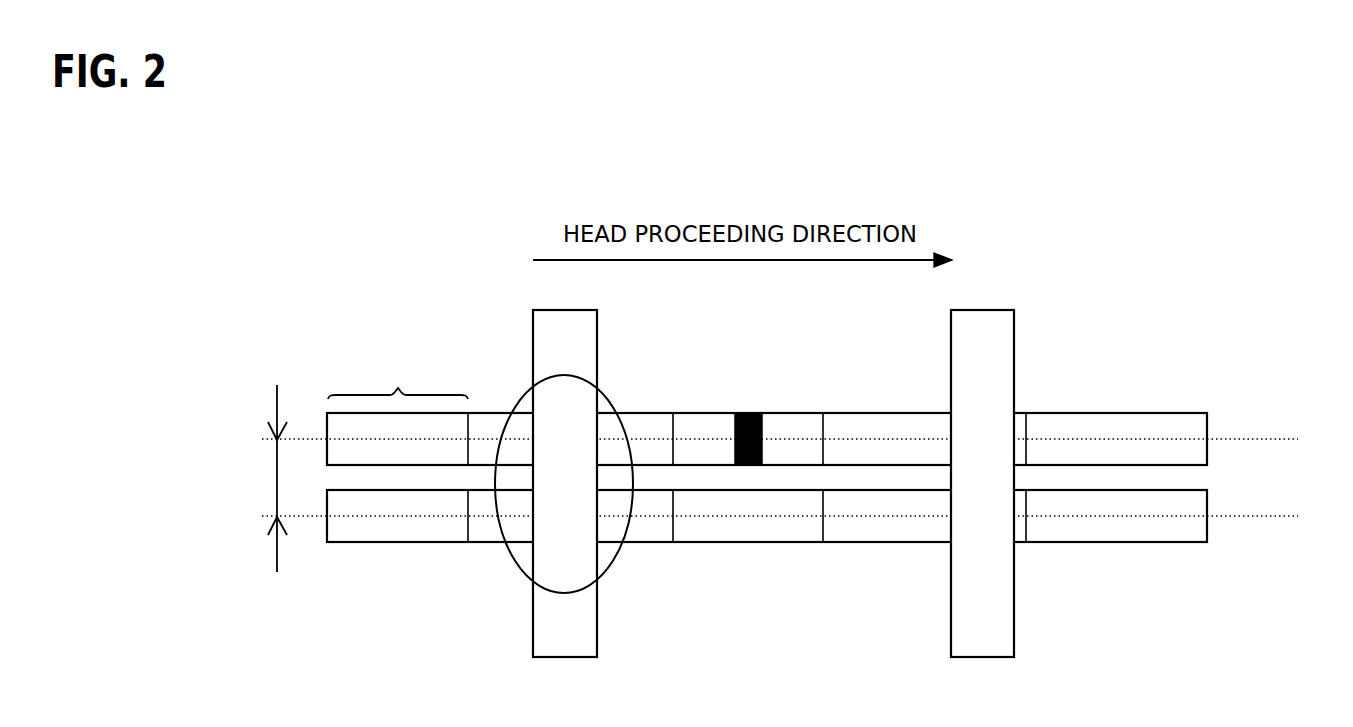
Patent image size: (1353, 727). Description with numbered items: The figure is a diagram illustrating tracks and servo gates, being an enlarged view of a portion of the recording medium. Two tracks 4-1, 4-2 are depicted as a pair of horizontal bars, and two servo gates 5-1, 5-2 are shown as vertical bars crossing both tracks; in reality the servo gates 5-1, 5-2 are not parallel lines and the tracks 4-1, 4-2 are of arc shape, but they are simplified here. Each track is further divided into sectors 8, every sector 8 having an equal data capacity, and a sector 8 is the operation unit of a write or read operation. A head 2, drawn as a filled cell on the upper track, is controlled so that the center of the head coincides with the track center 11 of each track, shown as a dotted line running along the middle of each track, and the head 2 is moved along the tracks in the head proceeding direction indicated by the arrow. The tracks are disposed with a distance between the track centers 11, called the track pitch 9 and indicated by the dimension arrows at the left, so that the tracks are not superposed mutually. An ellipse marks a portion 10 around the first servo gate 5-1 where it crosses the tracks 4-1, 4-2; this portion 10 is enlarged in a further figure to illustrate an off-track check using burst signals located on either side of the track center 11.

The head 2 is at (743, 413).
The track 4-1 is at (1123, 413).
The track 4-2 is at (1135, 543).
The servo gate 5-1 is at (597, 639).
The servo gate 5-2 is at (1014, 637).
The sector 8 is at (398, 376).
The track pitch 9 is at (277, 462).
The portion 10 is at (604, 396).
The track center 11 is at (1263, 439).